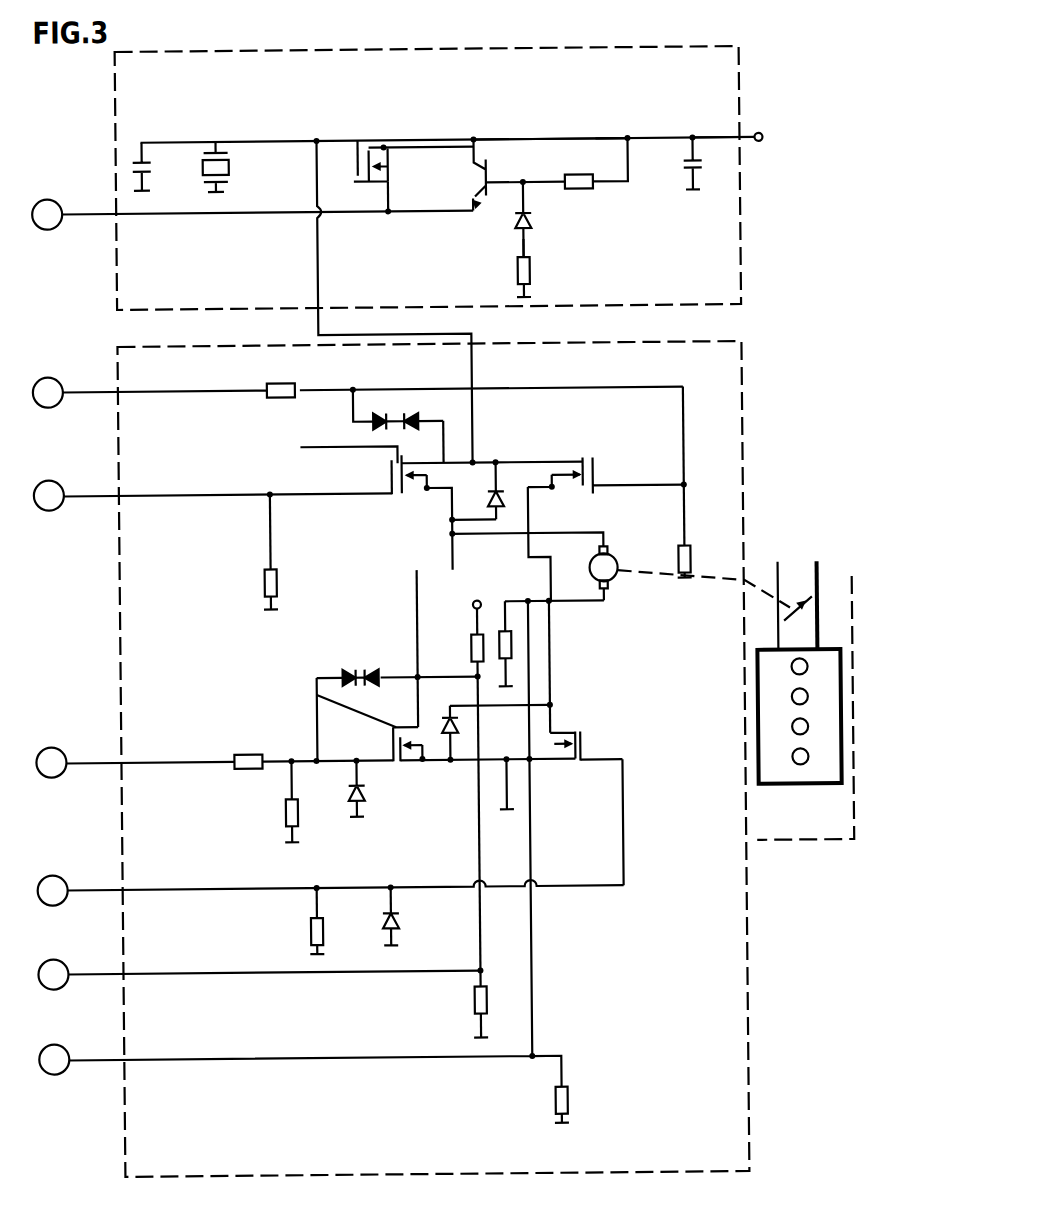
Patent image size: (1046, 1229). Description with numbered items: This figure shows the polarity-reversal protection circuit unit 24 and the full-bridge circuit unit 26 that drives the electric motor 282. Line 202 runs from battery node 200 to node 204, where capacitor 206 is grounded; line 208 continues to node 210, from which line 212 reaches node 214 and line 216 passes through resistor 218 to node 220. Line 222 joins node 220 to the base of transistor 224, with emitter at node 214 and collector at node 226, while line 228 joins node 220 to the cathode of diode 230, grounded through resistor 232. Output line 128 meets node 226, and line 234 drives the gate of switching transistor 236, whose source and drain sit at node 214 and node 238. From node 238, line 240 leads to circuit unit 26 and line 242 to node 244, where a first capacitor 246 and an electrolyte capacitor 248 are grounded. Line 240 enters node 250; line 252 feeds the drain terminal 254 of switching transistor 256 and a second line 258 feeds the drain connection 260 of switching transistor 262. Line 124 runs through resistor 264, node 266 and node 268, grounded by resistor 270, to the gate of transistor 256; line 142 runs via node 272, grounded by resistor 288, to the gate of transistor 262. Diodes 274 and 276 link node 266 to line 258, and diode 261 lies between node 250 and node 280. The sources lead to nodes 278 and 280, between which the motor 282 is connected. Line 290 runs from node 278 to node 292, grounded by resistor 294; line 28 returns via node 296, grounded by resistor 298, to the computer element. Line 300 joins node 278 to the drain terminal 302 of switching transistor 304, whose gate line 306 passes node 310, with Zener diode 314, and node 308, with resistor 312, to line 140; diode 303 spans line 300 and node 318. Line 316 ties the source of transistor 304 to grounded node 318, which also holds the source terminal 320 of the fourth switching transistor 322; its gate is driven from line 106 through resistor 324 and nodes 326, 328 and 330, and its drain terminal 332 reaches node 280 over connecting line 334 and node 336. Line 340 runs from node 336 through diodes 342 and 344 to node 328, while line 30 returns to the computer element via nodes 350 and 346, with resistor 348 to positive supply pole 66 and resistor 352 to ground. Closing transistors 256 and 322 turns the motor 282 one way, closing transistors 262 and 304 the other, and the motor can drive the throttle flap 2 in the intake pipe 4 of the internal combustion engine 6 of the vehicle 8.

The throttle flap 2 is at (808, 600).
The intake pipe 4 is at (818, 636).
The internal combustion engine 6 is at (795, 790).
The motor vehicle 8 is at (788, 845).
The second circuit unit 24 is at (745, 50).
The third circuit unit 26 is at (744, 344).
The line 28 is at (68, 1062).
The line 30 is at (68, 978).
The positive pole of the supply voltage 66 is at (474, 602).
The line 106 is at (70, 768).
The line 124 is at (70, 392).
The output line 128 is at (90, 213).
The line 140 is at (70, 890).
The line 142 is at (65, 500).
The circuit node 200 is at (766, 142).
The line 202 is at (700, 140).
The circuit node 204 is at (697, 140).
The capacitor 206 is at (703, 186).
The line 208 is at (632, 140).
The circuit node 210 is at (630, 140).
The line 212 is at (517, 140).
The circuit node 214 is at (478, 140).
The line 216 is at (632, 172).
The resistor 218 is at (597, 190).
The circuit node 220 is at (545, 183).
The line 222 is at (527, 183).
The transistor 224 is at (481, 212).
The circuit node 226 is at (392, 214).
The line 228 is at (532, 200).
The diode 230 is at (530, 238).
The resistor 232 is at (521, 268).
The line 234 is at (393, 181).
The switching transistor 236 is at (364, 142).
The circuit node 238 is at (321, 140).
The line 240 is at (321, 328).
The line 242 is at (253, 140).
The circuit node 244 is at (220, 140).
The first capacitor 246 is at (150, 175).
The electrolyte capacitor 248 is at (238, 173).
The circuit node 250 is at (476, 460).
The line 252 is at (520, 463).
The drain terminal 254 is at (584, 457).
The switching transistor 256 is at (600, 470).
The second line 258 is at (446, 455).
The drain connection 260 is at (338, 449).
The diode 261 is at (505, 498).
The switching transistor 262 is at (386, 476).
The resistor 264 is at (270, 384).
The circuit node 266 is at (355, 389).
The circuit node 268 is at (685, 480).
The resistor 270 is at (692, 560).
The circuit node 272 is at (271, 493).
The Zener diode 274 is at (372, 421).
The diode 276 is at (410, 418).
The circuit node 278 is at (551, 604).
The circuit node 280 is at (452, 532).
The electric motor 282 is at (618, 575).
The resistor 288 is at (265, 580).
The line 290 is at (528, 558).
The circuit node 292 is at (528, 602).
The resistor 294 is at (512, 645).
The circuit node 296 is at (530, 1055).
The resistor 298 is at (563, 1100).
The line 300 is at (550, 662).
The drain terminal 302 is at (570, 733).
The diode 303 is at (451, 765).
The switching transistor 304 is at (586, 742).
The line 306 is at (621, 862).
The circuit node 308 is at (314, 880).
The circuit node 310 is at (388, 885).
The resistor 312 is at (308, 935).
The Zener diode 314 is at (396, 923).
The line 316 is at (600, 765).
The circuit node 318 is at (530, 780).
The source terminal 320 is at (402, 762).
The fourth switching transistor 322 is at (384, 743).
The resistor 324 is at (237, 753).
The circuit node 326 is at (288, 758).
The circuit node 328 is at (313, 758).
The circuit node 330 is at (354, 765).
The drain terminal 332 is at (318, 694).
The connecting line 334 is at (417, 693).
The circuit node 336 is at (417, 630).
The line 340 is at (395, 677).
The diode 342 is at (367, 643).
The Zener diode 344 is at (342, 668).
The circuit node 346 is at (475, 675).
The resistor 348 is at (471, 645).
The circuit node 350 is at (477, 971).
The resistor 352 is at (471, 1005).